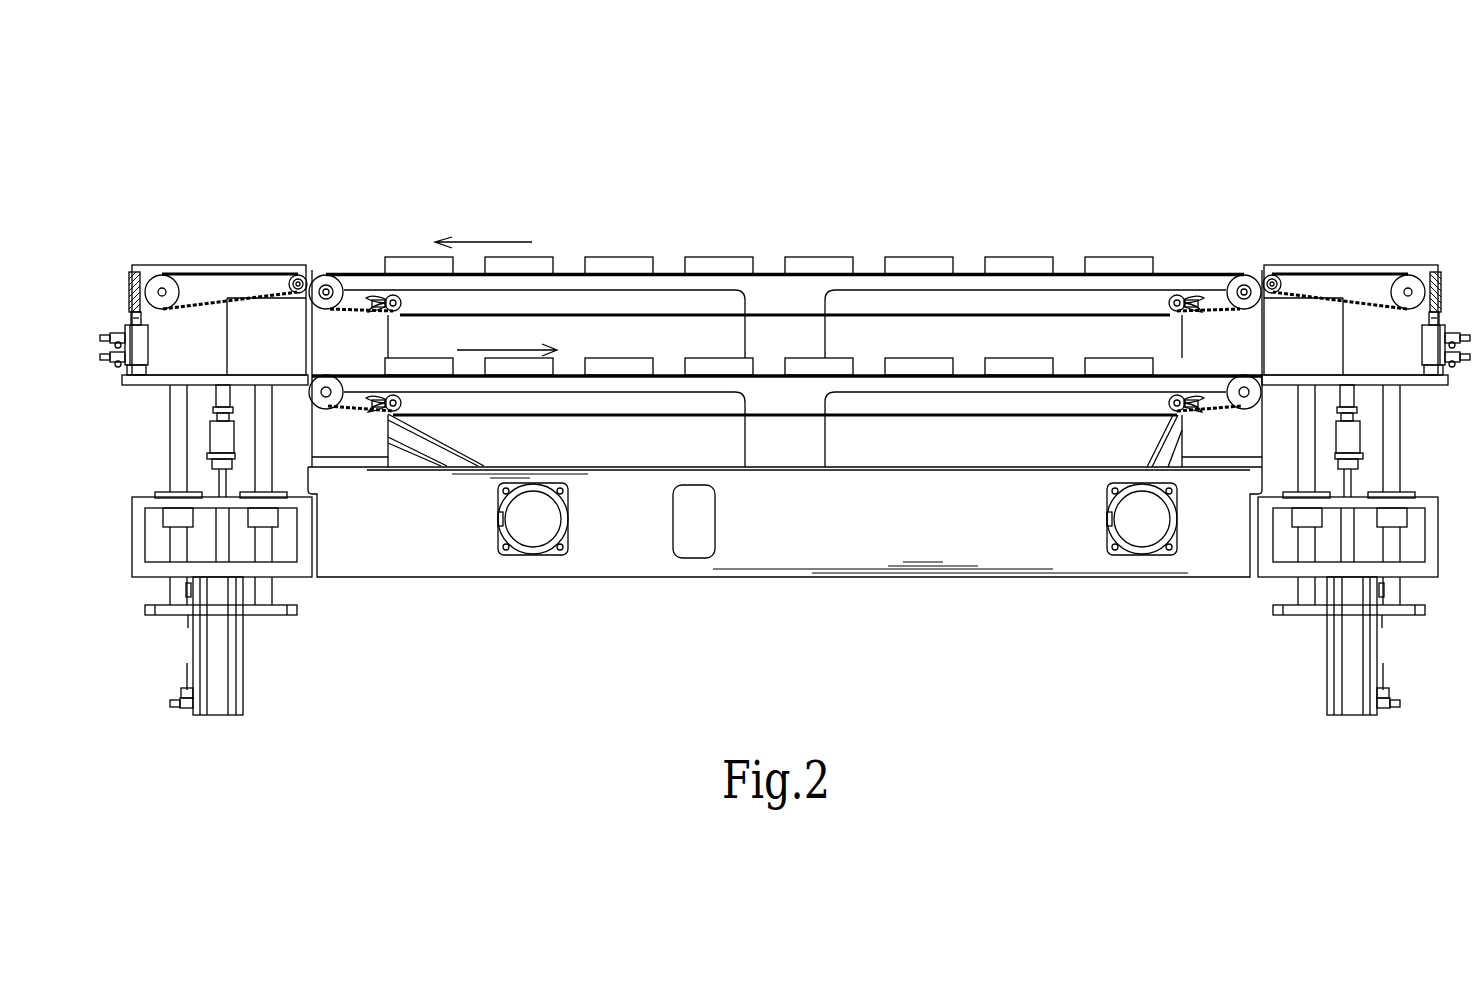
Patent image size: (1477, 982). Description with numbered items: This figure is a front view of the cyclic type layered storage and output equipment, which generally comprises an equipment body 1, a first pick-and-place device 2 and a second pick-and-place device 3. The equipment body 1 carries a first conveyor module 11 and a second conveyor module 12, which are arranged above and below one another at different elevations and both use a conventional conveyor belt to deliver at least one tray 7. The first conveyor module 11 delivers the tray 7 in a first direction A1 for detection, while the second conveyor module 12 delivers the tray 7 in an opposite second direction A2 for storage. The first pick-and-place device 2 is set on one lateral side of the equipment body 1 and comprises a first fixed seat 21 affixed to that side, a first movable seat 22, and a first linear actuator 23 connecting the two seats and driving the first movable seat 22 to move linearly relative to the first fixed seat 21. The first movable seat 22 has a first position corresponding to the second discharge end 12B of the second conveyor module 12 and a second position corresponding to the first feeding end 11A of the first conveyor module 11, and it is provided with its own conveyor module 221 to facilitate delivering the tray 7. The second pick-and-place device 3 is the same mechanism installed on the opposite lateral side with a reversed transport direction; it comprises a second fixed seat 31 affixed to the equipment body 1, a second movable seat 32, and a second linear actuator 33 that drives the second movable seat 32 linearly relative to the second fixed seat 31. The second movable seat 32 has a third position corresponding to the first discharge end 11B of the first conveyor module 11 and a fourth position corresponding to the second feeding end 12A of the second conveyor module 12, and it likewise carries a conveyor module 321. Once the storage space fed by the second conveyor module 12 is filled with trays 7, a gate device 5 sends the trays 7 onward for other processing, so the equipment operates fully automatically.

The equipment body 1 is at (630, 580).
The first pick-and-place device 2 is at (1358, 305).
The second pick-and-place device 3 is at (203, 282).
The gate device 5 is at (140, 273).
The tray 7 is at (613, 267).
The first conveyor module 11 is at (785, 217).
The first feeding end 11A is at (1240, 268).
The first discharge end 11B is at (330, 262).
The second conveyor module 12 is at (785, 504).
The second feeding end 12A is at (328, 416).
The second discharge end 12B is at (1240, 422).
The first fixed seat 21 is at (1293, 570).
The first movable seat 22 is at (1410, 386).
The conveyor module 221 is at (1318, 273).
The first linear actuator 23 is at (1333, 703).
The second fixed seat 31 is at (305, 567).
The second movable seat 32 is at (153, 386).
The conveyor module 321 is at (267, 273).
The second linear actuator 33 is at (238, 698).
The first direction A1 is at (495, 242).
The second direction A2 is at (510, 347).